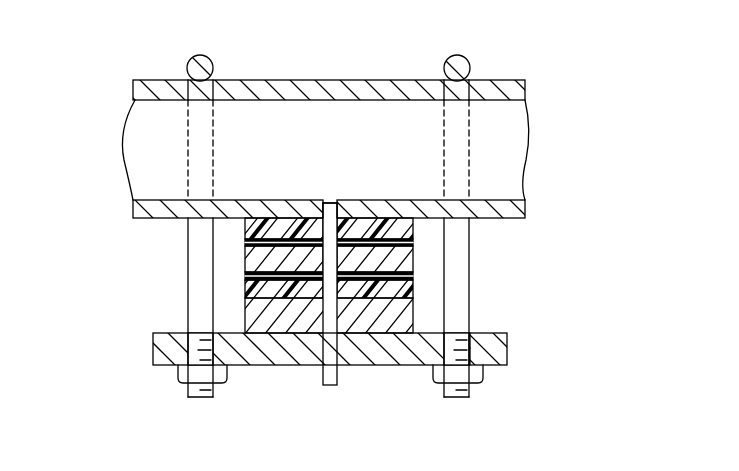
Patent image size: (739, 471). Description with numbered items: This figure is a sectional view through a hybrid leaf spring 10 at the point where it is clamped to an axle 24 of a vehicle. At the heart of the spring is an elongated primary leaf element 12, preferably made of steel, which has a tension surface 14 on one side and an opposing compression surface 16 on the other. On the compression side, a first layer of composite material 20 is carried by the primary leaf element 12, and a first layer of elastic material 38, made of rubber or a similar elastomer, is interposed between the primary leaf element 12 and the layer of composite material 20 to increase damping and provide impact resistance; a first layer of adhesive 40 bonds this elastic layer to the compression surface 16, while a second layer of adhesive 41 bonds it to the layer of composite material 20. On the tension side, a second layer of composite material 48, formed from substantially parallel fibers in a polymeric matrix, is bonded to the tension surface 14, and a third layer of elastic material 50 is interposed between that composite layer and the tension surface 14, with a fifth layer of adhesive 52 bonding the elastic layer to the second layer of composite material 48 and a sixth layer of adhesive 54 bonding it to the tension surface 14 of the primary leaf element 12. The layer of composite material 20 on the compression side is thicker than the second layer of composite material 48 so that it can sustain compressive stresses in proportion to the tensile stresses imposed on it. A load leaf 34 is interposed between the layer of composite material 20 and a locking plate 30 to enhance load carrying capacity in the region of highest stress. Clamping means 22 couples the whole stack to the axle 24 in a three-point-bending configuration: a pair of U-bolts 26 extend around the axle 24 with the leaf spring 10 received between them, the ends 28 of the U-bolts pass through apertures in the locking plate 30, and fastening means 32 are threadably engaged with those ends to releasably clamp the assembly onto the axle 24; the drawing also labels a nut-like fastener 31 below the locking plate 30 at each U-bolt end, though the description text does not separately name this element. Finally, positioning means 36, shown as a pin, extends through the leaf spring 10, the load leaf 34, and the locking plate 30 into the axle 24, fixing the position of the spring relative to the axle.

The hybrid leaf spring 10 is at (74, 184).
The elongated primary leaf element 12 is at (313, 216).
The tension surface 14 is at (267, 216).
The compression surface 16 is at (388, 216).
The layer of composite material 20 is at (245, 285).
The clamping means 22 is at (126, 57).
The axle 24 is at (250, 80).
The U-bolts 26 is at (190, 60).
The ends of the U-bolts 28 is at (200, 398).
The locking plate 30 is at (373, 366).
The nut 31 is at (184, 376).
The fastening means 32 is at (184, 353).
The load leaf 34 is at (256, 311).
The positioning means 36 is at (338, 211).
The first layer of elastic material 38 is at (245, 276).
The first layer of adhesive 40 is at (413, 275).
The second layer of adhesive 41 is at (413, 284).
The second layer of composite material 48 is at (245, 232).
The third layer of elastic material 50 is at (245, 241).
The fifth layer of adhesive 52 is at (416, 236).
The sixth layer of adhesive 54 is at (413, 242).